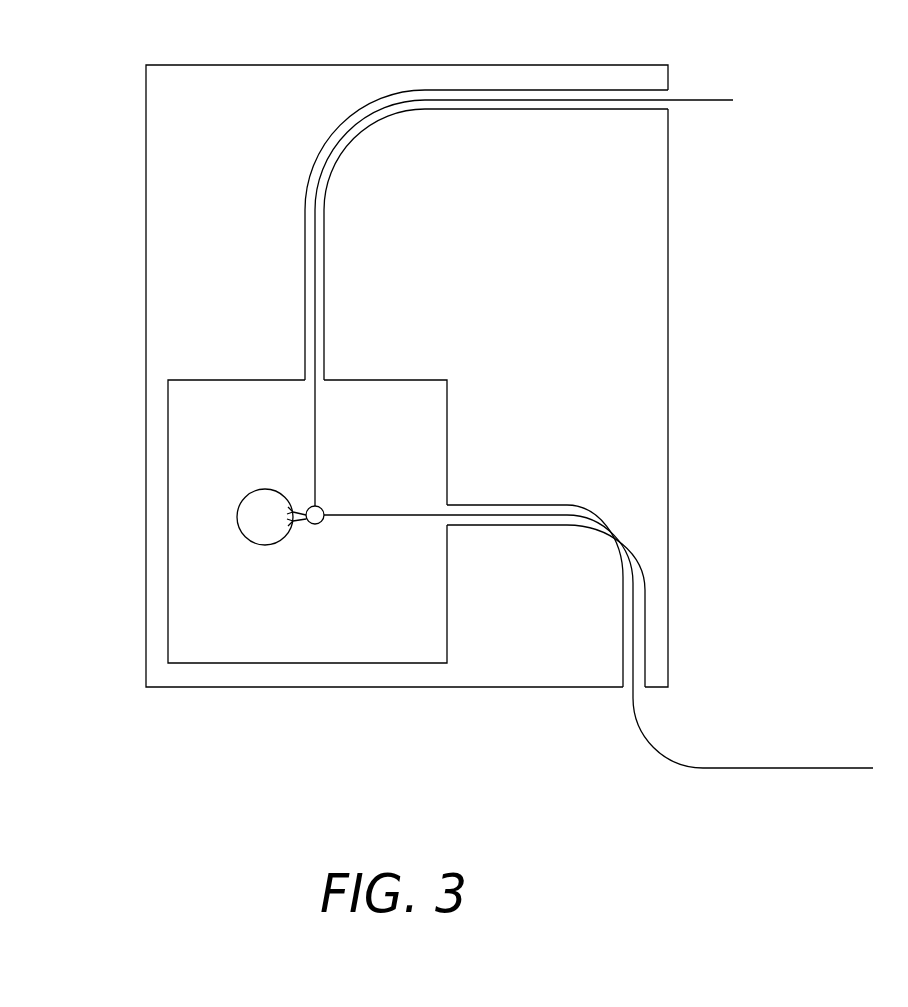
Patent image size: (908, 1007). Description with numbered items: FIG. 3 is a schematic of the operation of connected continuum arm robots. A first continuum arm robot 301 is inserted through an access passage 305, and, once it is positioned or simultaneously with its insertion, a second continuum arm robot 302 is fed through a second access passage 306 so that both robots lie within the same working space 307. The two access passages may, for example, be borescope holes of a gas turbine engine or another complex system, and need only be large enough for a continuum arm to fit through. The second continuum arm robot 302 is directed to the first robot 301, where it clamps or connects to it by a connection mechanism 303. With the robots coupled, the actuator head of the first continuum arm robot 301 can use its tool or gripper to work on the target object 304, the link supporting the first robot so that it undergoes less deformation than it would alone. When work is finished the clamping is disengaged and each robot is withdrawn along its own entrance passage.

The first continuum arm robot 301 is at (838, 768).
The second continuum arm robot 302 is at (703, 100).
The connection mechanism 303 is at (531, 477).
The target object 304 is at (556, 235).
The access passage 305 is at (265, 632).
The second access passage 306 is at (623, 601).
The working space 307 is at (240, 521).